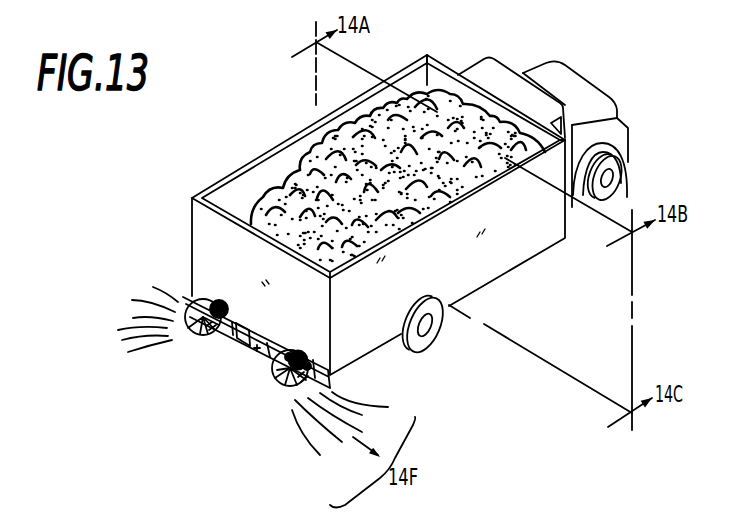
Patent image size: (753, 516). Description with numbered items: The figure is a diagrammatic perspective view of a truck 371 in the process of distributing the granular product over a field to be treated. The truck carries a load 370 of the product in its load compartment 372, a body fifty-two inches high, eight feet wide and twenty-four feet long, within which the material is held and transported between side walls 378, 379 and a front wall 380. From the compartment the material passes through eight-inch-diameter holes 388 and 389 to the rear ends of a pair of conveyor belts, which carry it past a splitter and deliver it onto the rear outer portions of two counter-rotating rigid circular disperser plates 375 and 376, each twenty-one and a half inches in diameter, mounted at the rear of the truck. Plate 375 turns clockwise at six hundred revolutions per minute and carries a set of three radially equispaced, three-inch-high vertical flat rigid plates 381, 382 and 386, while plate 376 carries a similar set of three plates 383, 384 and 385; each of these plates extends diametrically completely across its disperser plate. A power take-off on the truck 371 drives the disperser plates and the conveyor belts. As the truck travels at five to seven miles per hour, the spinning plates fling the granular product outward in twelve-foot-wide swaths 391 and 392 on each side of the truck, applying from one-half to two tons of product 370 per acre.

The load 370 is at (288, 190).
The truck 371 is at (580, 90).
The load compartment 372 is at (304, 146).
The disperser plate 375 is at (201, 335).
The disperser plate 376 is at (282, 385).
The side wall 378 is at (382, 309).
The side wall 379 is at (225, 202).
The front wall 380 is at (203, 223).
The flat rigid plate 381 is at (216, 334).
The flat rigid plate 382 is at (183, 298).
The flat rigid plate 383 is at (277, 361).
The flat rigid plate 384 is at (288, 387).
The flat rigid plate 385 is at (318, 358).
The flat rigid plate 386 is at (184, 334).
The hole 388 is at (204, 282).
The hole 389 is at (294, 329).
The swath 391 is at (132, 313).
The swath 392 is at (340, 433).